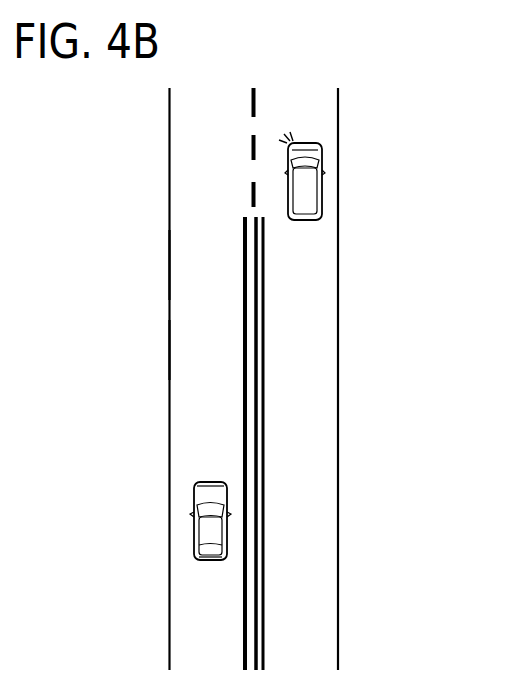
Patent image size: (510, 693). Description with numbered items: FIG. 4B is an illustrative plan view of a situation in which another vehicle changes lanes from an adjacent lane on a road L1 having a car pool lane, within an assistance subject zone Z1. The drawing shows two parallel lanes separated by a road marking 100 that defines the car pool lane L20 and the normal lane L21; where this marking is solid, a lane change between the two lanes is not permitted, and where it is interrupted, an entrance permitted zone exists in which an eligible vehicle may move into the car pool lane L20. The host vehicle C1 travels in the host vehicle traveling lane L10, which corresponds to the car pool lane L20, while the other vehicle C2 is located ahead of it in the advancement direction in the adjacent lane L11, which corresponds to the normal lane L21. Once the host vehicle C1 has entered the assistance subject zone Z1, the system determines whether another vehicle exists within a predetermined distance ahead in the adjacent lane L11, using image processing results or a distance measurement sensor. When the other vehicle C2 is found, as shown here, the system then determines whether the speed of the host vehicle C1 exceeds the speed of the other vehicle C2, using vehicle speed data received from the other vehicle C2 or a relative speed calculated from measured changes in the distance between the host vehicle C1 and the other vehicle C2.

The host vehicle traveling lane L10 is at (185, 154).
The car pool lane L20 is at (128, 379).
The road L1 is at (168, 262).
The assistance subject zone Z1 is at (183, 344).
The adjacent lane L11 is at (417, 127).
The normal lane L21 is at (384, 379).
The road marking 100 is at (265, 517).
The host vehicle C1 is at (210, 481).
The other vehicle C2 is at (302, 221).